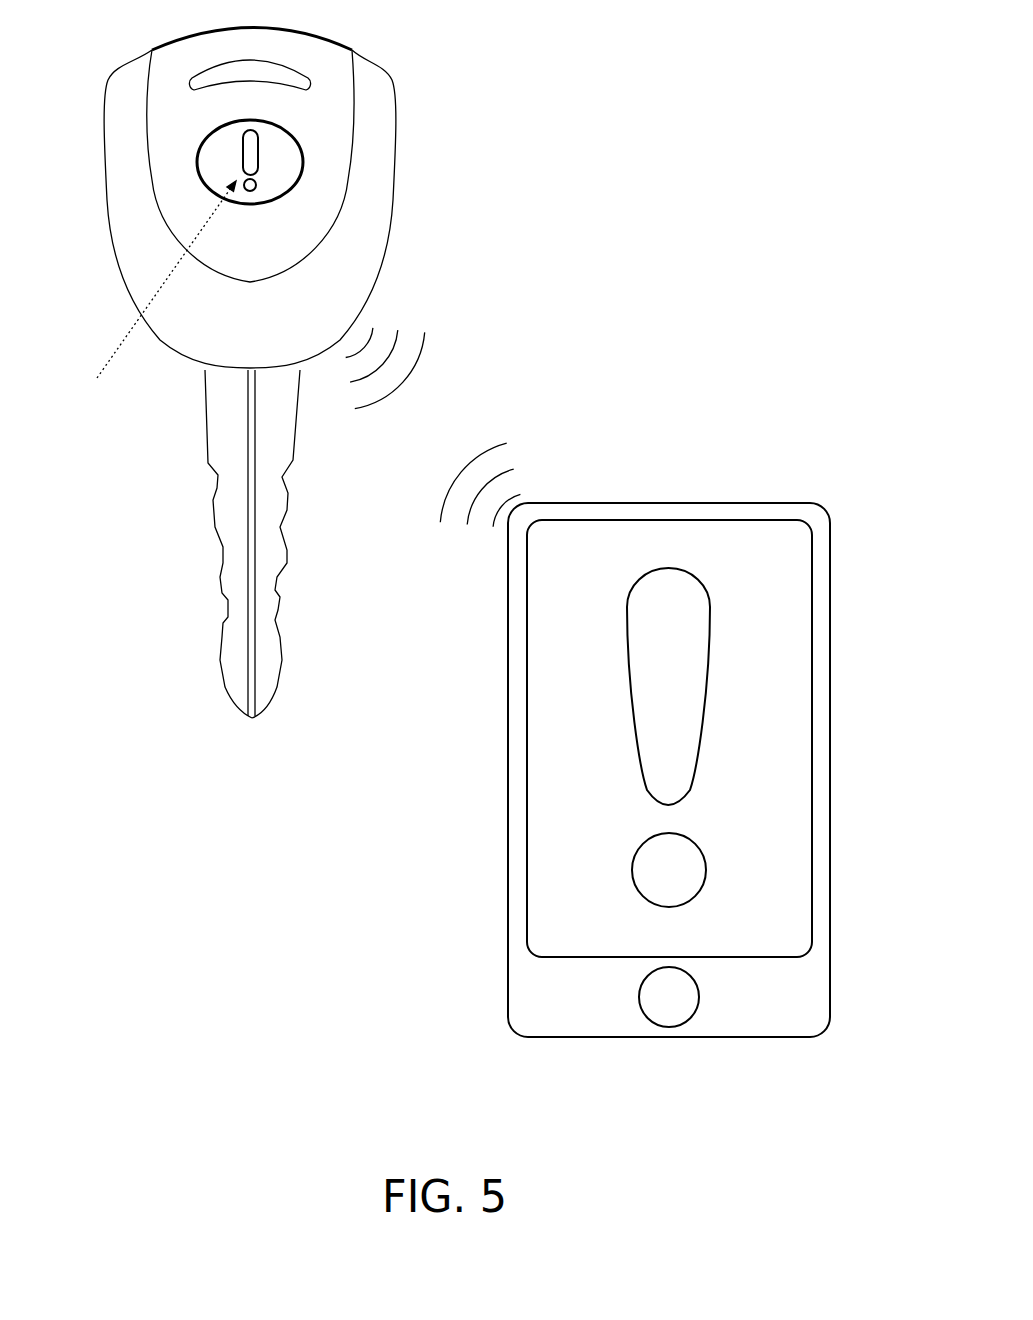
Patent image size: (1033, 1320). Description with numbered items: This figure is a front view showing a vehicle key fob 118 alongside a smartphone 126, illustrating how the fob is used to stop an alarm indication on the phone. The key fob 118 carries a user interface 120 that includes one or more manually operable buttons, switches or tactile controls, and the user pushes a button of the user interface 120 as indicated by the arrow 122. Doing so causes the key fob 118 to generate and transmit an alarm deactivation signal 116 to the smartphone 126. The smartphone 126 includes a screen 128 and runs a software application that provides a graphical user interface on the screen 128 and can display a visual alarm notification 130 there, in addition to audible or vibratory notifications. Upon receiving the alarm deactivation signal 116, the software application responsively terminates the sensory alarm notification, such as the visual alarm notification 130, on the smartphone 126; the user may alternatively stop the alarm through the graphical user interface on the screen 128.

The alarm deactivation signal 116 is at (420, 365).
The key fob 118 is at (400, 107).
The user interface 120 is at (217, 157).
The arrow 122 is at (122, 342).
The smartphone 126 is at (830, 635).
The screen 128 is at (783, 820).
The visual alarm notification 130 is at (663, 720).